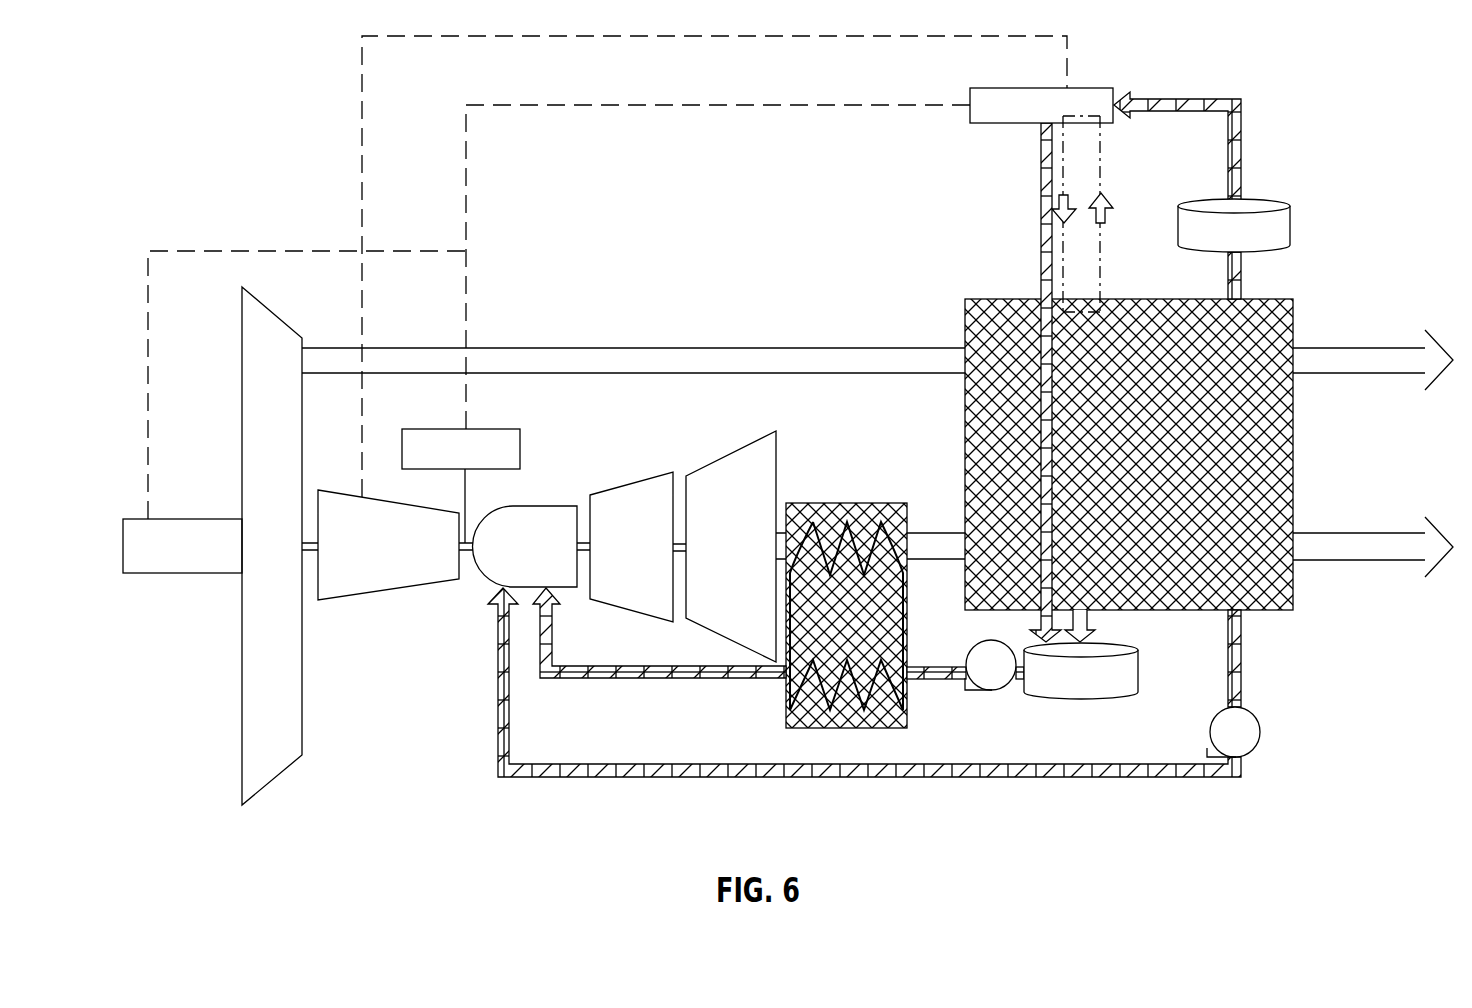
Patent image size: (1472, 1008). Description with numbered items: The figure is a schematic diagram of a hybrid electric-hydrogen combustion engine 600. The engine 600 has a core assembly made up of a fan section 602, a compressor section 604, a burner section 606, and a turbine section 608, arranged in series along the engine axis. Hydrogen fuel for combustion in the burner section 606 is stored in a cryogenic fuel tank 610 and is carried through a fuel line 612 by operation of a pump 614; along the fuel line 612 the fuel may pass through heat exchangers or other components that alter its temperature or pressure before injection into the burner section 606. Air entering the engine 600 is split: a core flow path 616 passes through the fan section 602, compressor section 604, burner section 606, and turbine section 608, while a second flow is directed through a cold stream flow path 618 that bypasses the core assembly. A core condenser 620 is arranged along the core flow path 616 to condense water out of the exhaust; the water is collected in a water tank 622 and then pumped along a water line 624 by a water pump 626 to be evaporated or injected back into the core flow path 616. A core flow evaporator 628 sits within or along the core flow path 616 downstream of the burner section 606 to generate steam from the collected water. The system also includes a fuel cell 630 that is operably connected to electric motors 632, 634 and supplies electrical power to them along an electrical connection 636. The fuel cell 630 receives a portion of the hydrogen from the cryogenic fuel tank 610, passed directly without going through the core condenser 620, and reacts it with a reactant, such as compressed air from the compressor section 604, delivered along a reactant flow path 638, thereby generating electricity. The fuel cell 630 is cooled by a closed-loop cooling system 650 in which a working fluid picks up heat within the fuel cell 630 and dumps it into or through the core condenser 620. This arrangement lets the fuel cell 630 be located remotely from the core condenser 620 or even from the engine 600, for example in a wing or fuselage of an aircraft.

The hybrid electric-hydrogen combustion engine 600 is at (243, 113).
The fan section 602 is at (268, 800).
The compressor section 604 is at (350, 603).
The burner section 606 is at (483, 589).
The turbine section 608 is at (649, 617).
The cryogenic fuel tank 610 is at (1275, 203).
The fuel line 612 is at (905, 777).
The pump 614 is at (1245, 745).
The core flow path 616 is at (1387, 552).
The cold stream flow path 618 is at (840, 362).
The core condenser 620 is at (1293, 472).
The water tank 622 is at (1068, 688).
The water line 624 is at (590, 674).
The water pump 626 is at (987, 680).
The core flow evaporator 628 is at (857, 503).
The fuel cell 630 is at (1085, 88).
The electric motor 632 is at (155, 563).
The electric motor 634 is at (483, 448).
The electrical connection 636 is at (880, 108).
The reactant flow path 638 is at (668, 38).
The closed-loop cooling system 650 is at (1100, 180).